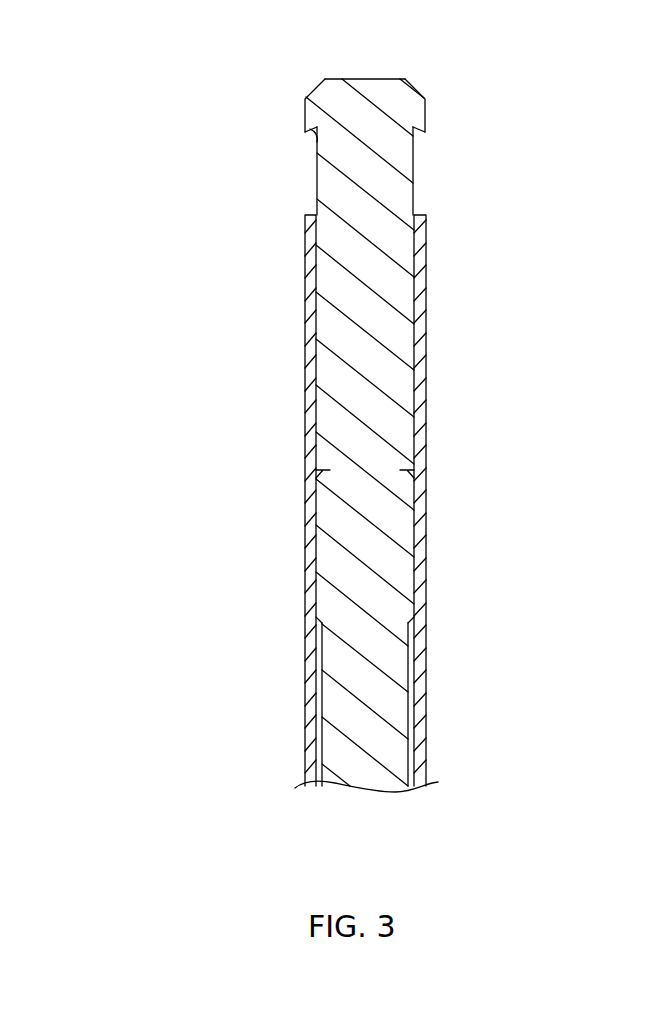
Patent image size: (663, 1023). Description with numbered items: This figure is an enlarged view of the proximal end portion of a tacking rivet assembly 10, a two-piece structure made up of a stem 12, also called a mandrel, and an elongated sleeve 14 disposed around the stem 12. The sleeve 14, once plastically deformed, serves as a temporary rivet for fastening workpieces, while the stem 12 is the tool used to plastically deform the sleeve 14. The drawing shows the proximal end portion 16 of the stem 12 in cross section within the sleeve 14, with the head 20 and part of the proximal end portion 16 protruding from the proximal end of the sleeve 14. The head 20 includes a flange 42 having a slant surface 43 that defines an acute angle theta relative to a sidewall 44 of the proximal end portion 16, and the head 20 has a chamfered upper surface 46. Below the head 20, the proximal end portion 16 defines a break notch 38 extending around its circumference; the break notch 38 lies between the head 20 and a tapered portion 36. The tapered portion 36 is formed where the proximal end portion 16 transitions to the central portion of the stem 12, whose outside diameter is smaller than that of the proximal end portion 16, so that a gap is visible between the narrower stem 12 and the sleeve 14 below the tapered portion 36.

The tacking rivet assembly 10 is at (146, 109).
The stem 12 is at (350, 722).
The elongated sleeve 14 is at (426, 405).
The proximal end portion 16 is at (388, 321).
The head 20 is at (407, 102).
The tapered portion 36 is at (312, 627).
The break notch 38 is at (316, 476).
The flange 42 is at (305, 118).
The slant surface 43 is at (425, 132).
The sidewall 44 is at (317, 195).
The chamfered upper surface 46 is at (370, 78).